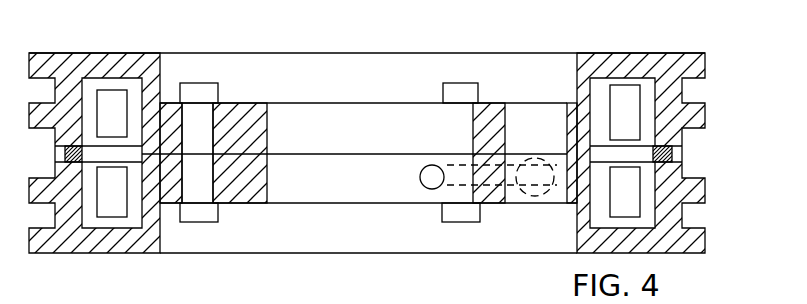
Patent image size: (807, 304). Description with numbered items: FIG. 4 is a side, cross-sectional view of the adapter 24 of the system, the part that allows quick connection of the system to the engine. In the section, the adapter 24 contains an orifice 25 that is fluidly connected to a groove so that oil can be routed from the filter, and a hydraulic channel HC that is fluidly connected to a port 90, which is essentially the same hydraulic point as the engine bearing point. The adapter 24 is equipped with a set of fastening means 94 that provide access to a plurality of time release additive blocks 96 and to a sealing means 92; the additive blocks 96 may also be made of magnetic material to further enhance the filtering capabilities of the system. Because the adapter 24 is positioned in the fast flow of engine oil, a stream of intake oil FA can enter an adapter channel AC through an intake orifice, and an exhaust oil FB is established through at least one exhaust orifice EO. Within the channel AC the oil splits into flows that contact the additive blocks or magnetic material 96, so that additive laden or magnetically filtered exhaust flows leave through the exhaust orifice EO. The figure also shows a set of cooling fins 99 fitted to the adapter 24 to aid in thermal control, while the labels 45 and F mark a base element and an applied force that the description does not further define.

The adapter 24 is at (708, 62).
The cooling fins 99 is at (712, 118).
The sealing means 92 is at (65, 155).
The time release additive blocks 96 is at (114, 132).
The fastening means 94 is at (218, 88).
The pin base 45 is at (457, 178).
The orifice 25 is at (420, 177).
The port 90 is at (528, 190).
The hydraulic channel HC is at (460, 158).
The force F is at (238, 203).
The stream of intake oil FA is at (132, 201).
The exhaust oil FB is at (605, 107).
The exhaust orifice EO is at (567, 73).
The adapter channel AC is at (603, 97).